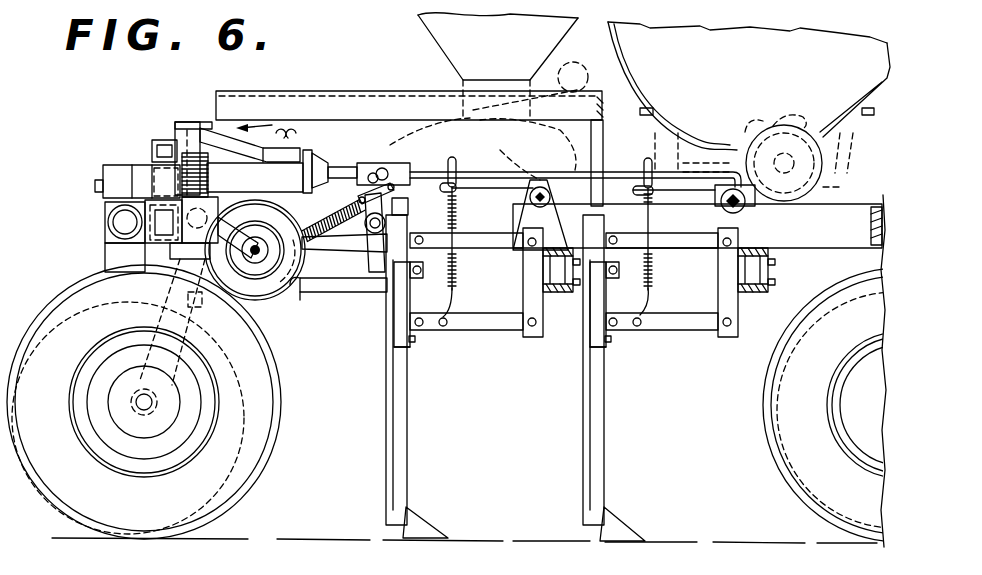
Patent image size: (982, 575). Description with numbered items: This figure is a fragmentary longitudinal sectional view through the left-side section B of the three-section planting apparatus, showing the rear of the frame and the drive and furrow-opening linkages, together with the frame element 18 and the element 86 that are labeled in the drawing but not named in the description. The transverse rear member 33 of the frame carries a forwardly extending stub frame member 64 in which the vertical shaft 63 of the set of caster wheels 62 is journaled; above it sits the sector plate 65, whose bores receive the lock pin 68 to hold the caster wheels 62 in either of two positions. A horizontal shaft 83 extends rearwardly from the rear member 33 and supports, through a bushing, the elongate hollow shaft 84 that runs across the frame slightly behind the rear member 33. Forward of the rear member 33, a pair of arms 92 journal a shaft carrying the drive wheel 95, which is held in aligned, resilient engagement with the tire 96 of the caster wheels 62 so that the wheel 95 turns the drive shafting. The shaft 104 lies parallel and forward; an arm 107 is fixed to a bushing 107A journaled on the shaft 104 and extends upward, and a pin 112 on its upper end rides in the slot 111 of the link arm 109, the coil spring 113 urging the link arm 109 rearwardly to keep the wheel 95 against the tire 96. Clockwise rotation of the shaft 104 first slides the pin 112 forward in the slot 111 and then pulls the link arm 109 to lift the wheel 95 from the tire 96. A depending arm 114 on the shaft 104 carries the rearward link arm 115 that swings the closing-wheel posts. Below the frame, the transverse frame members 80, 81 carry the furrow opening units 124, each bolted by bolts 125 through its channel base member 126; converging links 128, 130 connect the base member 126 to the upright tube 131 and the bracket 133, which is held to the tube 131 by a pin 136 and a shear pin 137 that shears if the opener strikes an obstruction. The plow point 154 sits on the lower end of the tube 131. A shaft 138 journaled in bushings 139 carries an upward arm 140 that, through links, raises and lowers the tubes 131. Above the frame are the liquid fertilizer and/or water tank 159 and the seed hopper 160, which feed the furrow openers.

The tool bar frame 18 is at (224, 318).
The transverse rear member 33 is at (115, 258).
The caster wheels 62 is at (236, 506).
The vertical shaft 63 is at (188, 122).
The stub frame member 64 is at (178, 262).
The sector plate 65 is at (269, 173).
The lock pin 68 is at (280, 140).
The transverse frame member 80 is at (753, 290).
The second frame member 81 is at (538, 336).
The horizontal shaft 83 is at (97, 187).
The elongate hollow shaft 84 is at (108, 225).
The bearing 86 is at (108, 235).
The arm 92 is at (255, 250).
The drive wheel 95 is at (343, 298).
The tire 96 is at (264, 438).
The shaft 104 is at (367, 235).
The arm 107 is at (370, 178).
The bushing 107A is at (421, 212).
The link arm 109 is at (318, 230).
The slot 111 is at (400, 194).
The pin 112 is at (347, 170).
The coil spring 113 is at (340, 242).
The arm 114 is at (366, 312).
The link arm 115 is at (322, 322).
The furrow opening unit 124 is at (384, 428).
The bolts 125 is at (543, 282).
The channel base member 126 is at (527, 308).
The converging link 128 is at (463, 238).
The converging link member 130 is at (503, 333).
The upright tube 131 is at (403, 405).
The bracket 133 is at (394, 336).
The pin 136 is at (418, 340).
The shear pin 137 is at (413, 350).
The shaft 138 is at (728, 205).
The bushings 139 is at (530, 198).
The arm 140 is at (736, 160).
The plow point 154 is at (425, 518).
The liquid fertilizer and/or water tank 159 is at (630, 67).
The seed hopper 160 is at (437, 50).
The left-side section B is at (403, 564).